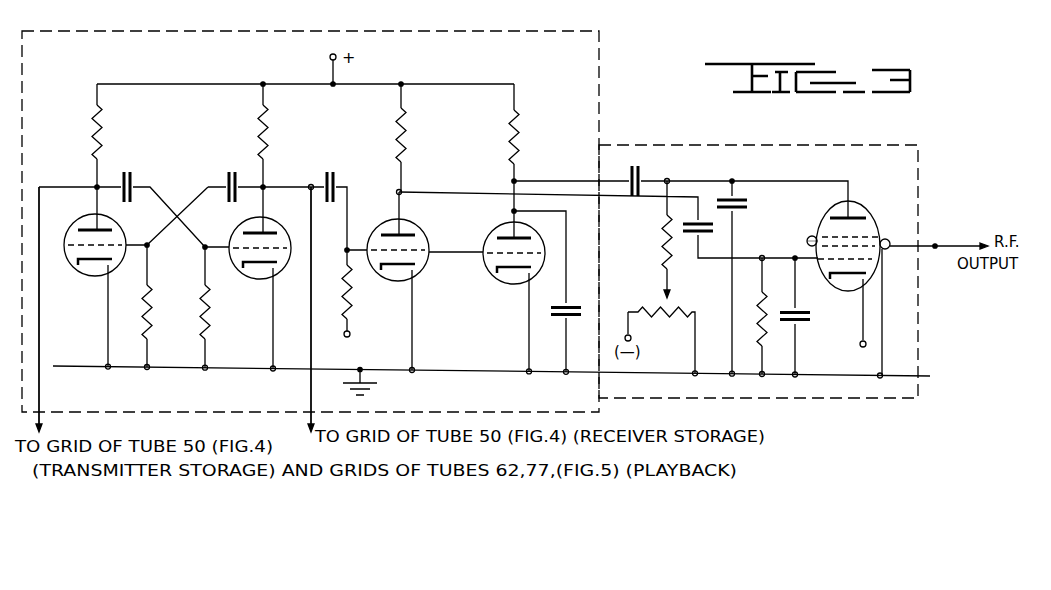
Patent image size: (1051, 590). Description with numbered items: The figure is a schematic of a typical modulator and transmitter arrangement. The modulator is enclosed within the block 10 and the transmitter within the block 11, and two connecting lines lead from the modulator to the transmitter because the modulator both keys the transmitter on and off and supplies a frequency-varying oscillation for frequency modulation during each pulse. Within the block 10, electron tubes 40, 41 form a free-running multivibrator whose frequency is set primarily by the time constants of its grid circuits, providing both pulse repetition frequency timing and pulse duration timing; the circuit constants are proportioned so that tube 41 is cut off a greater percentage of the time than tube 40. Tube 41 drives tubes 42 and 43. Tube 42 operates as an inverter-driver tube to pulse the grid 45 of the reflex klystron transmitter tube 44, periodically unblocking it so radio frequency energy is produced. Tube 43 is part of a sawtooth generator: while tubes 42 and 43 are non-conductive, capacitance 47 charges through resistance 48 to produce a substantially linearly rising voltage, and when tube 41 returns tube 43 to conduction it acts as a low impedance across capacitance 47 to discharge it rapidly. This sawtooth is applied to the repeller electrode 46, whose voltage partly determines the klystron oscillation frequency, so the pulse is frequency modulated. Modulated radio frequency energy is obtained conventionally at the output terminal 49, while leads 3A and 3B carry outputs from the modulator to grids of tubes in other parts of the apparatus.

The modulator 10 is at (90, 30).
The transmitter 11 is at (688, 145).
The output lead to grid of tube 50 (receiver storage) 3A is at (306, 430).
The output lead to grid of tube 50 (transmitter storage) 3B is at (42, 427).
The electron tube 40 is at (82, 268).
The electron tube 41 is at (244, 272).
The inverter-driver tube 42 is at (382, 275).
The tube 43 is at (500, 277).
The reflex klystron transmitter tube 44 is at (817, 224).
The grid 45 is at (828, 278).
The repeller electrode 46 is at (852, 218).
The capacitance 47 is at (574, 310).
The resistance 48 is at (516, 140).
The output terminal 49 is at (936, 246).